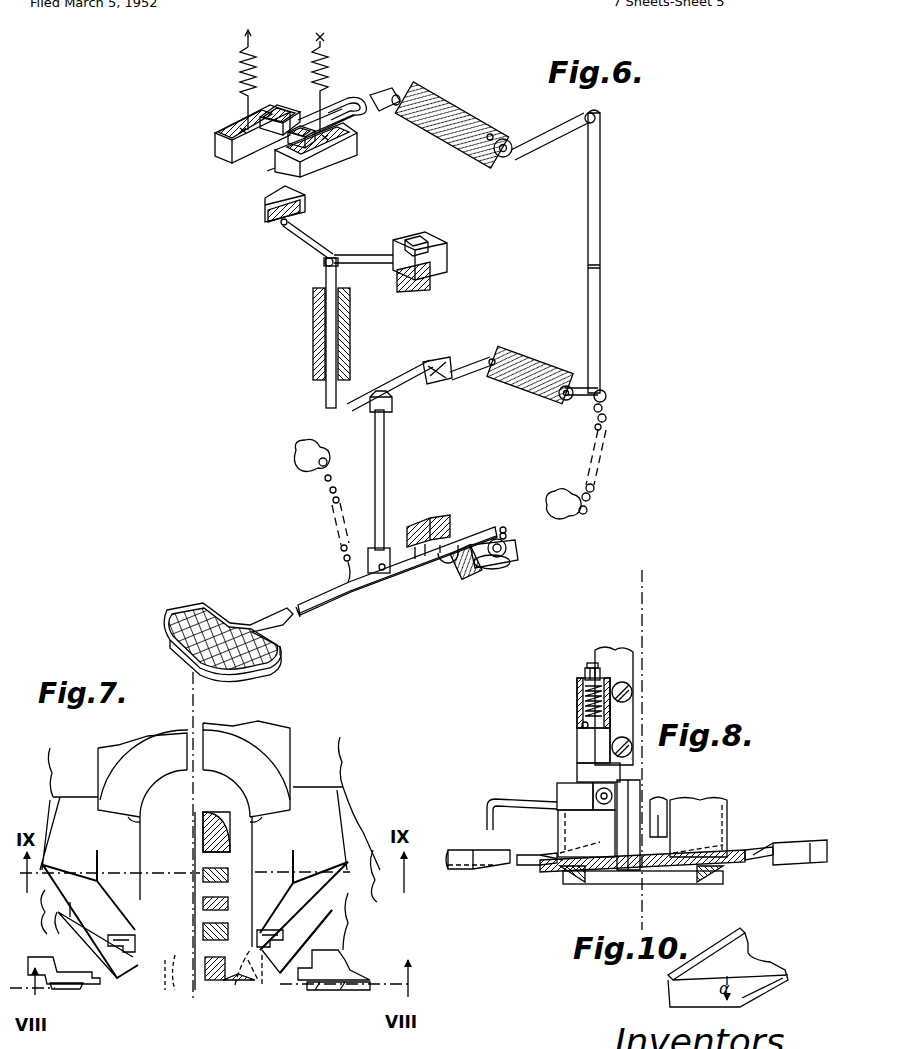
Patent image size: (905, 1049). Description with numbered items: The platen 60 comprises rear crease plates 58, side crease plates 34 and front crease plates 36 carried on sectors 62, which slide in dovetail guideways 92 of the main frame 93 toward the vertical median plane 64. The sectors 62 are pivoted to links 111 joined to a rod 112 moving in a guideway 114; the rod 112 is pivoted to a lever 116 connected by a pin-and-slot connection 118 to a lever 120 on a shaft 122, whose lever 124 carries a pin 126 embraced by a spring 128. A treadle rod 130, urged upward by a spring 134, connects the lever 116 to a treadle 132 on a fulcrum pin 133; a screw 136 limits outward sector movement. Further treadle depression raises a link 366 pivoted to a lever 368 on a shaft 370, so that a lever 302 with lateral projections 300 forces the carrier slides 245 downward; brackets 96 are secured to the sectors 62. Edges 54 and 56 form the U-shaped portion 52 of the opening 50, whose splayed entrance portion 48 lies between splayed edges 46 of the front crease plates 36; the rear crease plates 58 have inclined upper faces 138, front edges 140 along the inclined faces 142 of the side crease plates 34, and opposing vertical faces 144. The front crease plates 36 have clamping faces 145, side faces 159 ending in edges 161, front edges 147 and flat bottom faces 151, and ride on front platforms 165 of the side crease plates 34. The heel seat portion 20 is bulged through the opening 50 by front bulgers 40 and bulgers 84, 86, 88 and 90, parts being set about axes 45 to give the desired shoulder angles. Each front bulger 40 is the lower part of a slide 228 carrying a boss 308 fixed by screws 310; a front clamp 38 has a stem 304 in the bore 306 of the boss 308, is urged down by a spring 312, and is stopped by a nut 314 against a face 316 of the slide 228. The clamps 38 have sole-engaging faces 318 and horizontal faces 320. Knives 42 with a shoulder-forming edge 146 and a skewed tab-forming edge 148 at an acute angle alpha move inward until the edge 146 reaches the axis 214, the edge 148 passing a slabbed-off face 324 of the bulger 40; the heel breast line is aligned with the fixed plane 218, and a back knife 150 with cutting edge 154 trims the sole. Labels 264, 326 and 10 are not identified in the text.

In FIG. 6, the spring 264 is at (317, 74).
In FIG. 6, the lateral projections 300 is at (262, 108).
In FIG. 6, the lever 302 is at (352, 102).
In FIG. 6, the brackets 96 is at (215, 143).
In FIG. 6, the carrier slide 245 is at (275, 172).
In FIG. 6, the shaft 370 is at (442, 118).
In FIG. 6, the lever 368 is at (540, 133).
In FIG. 6, the link 366 is at (604, 156).
In FIG. 6, the sectors 62 is at (305, 208).
In FIG. 6, the dovetail guideways 92 is at (272, 232).
In FIG. 6, the links 111 is at (361, 255).
In FIG. 6, the main frame 93 is at (350, 326).
In FIG. 6, the guideway 114 is at (312, 342).
In FIG. 6, the rod 112 is at (336, 346).
In FIG. 6, the lever 116 is at (405, 380).
In FIG. 6, the pin-and-slot connection 118 is at (434, 385).
In FIG. 6, the lever 120 is at (460, 378).
In FIG. 6, the shaft 122 is at (515, 396).
In FIG. 6, the lever 124 is at (575, 400).
In FIG. 6, the pin 126 is at (606, 392).
In FIG. 6, the spring 128 is at (608, 417).
In FIG. 6, the treadle rod 130 is at (384, 481).
In FIG. 6, the fulcrum pin 133 is at (407, 536).
In FIG. 6, the spring 134 is at (325, 485).
In FIG. 6, the screw 136 is at (502, 529).
In FIG. 6, the treadle 132 is at (283, 630).
In FIG. 7, the platen 60 is at (297, 719).
In FIG. 7, the side crease plates 34 is at (337, 813).
In FIG. 7, the rear crease plates 58 is at (98, 763).
In FIG. 7, the upper face 138 is at (148, 753).
In FIG. 7, the edges 56 is at (157, 787).
In FIG. 7, the U-shape portion 52 is at (178, 787).
In FIG. 7, the vertical faces 144 is at (197, 738).
In FIG. 7, the median plane 64 is at (193, 682).
In FIG. 8, the median plane 64 is at (643, 758).
In FIG. 7, the front edge 140 is at (132, 822).
In FIG. 7, the edges 54 is at (145, 842).
In FIG. 7, the bulger 90 is at (203, 843).
In FIG. 7, the bulger 88 is at (203, 868).
In FIG. 7, the bulger 86 is at (203, 900).
In FIG. 7, the bulger 84 is at (203, 928).
In FIG. 7, the side faces 159 is at (132, 943).
In FIG. 7, the inclined face 142 is at (113, 863).
In FIG. 7, the front platforms 165 is at (117, 933).
In FIG. 7, the edges 161 is at (140, 960).
In FIG. 7, the front crease plates 36 is at (72, 913).
In FIG. 8, the front crease plates 36 is at (518, 850).
In FIG. 7, the faces 145 is at (107, 957).
In FIG. 8, the faces 145 is at (550, 850).
In FIG. 7, the cutting edge 148 is at (337, 947).
In FIG. 10, the cutting edge 148 is at (700, 1003).
In FIG. 7, the shoulder- and fillet-forming knives 42 is at (53, 950).
In FIG. 8, the shoulder- and fillet-forming knives 42 is at (465, 850).
In FIG. 10, the shoulder- and fillet-forming knives 42 is at (760, 960).
In FIG. 7, the cutting edge 146 is at (117, 982).
In FIG. 8, the cutting edge 146 is at (502, 850).
In FIG. 10, the cutting edge 146 is at (670, 996).
In FIG. 7, the splayed edges 46 is at (267, 983).
In FIG. 7, the axes 45 is at (117, 983).
In FIG. 7, the opening 50 is at (153, 977).
In FIG. 7, the axis 214 is at (167, 977).
In FIG. 7, the fixed vertical plane 218 is at (180, 983).
In FIG. 7, the front clamps 38 is at (230, 968).
In FIG. 8, the front clamps 38 is at (727, 823).
In FIG. 7, the sole engaging faces 318 is at (230, 980).
In FIG. 8, the sole engaging faces 318 is at (627, 882).
In FIG. 7, the front edges 147 is at (107, 993).
In FIG. 8, the front edges 147 is at (538, 865).
In FIG. 7, the splayed opening 48 is at (127, 993).
In FIG. 8, the slide 228 is at (635, 658).
In FIG. 8, the face 316 is at (615, 673).
In FIG. 8, the screws 310 is at (623, 742).
In FIG. 8, the spring 312 is at (580, 697).
In FIG. 8, the nut 314 is at (587, 668).
In FIG. 8, the cylindrical bore 306 is at (583, 727).
In FIG. 8, the cylindrical stem 304 is at (595, 723).
In FIG. 8, the boss 308 is at (578, 767).
In FIG. 8, the wire 326 is at (507, 790).
In FIG. 8, the slabbed-off face 324 is at (623, 833).
In FIG. 8, the screw 10 is at (604, 796).
In FIG. 8, the horizontal faces 320 is at (597, 882).
In FIG. 8, the heel seat portion 20 is at (567, 880).
In FIG. 8, the front bulgers 40 is at (637, 875).
In FIG. 8, the cutting edge 154 is at (700, 884).
In FIG. 8, the back knife 150 is at (727, 884).
In FIG. 8, the flat bottom faces 151 is at (755, 867).